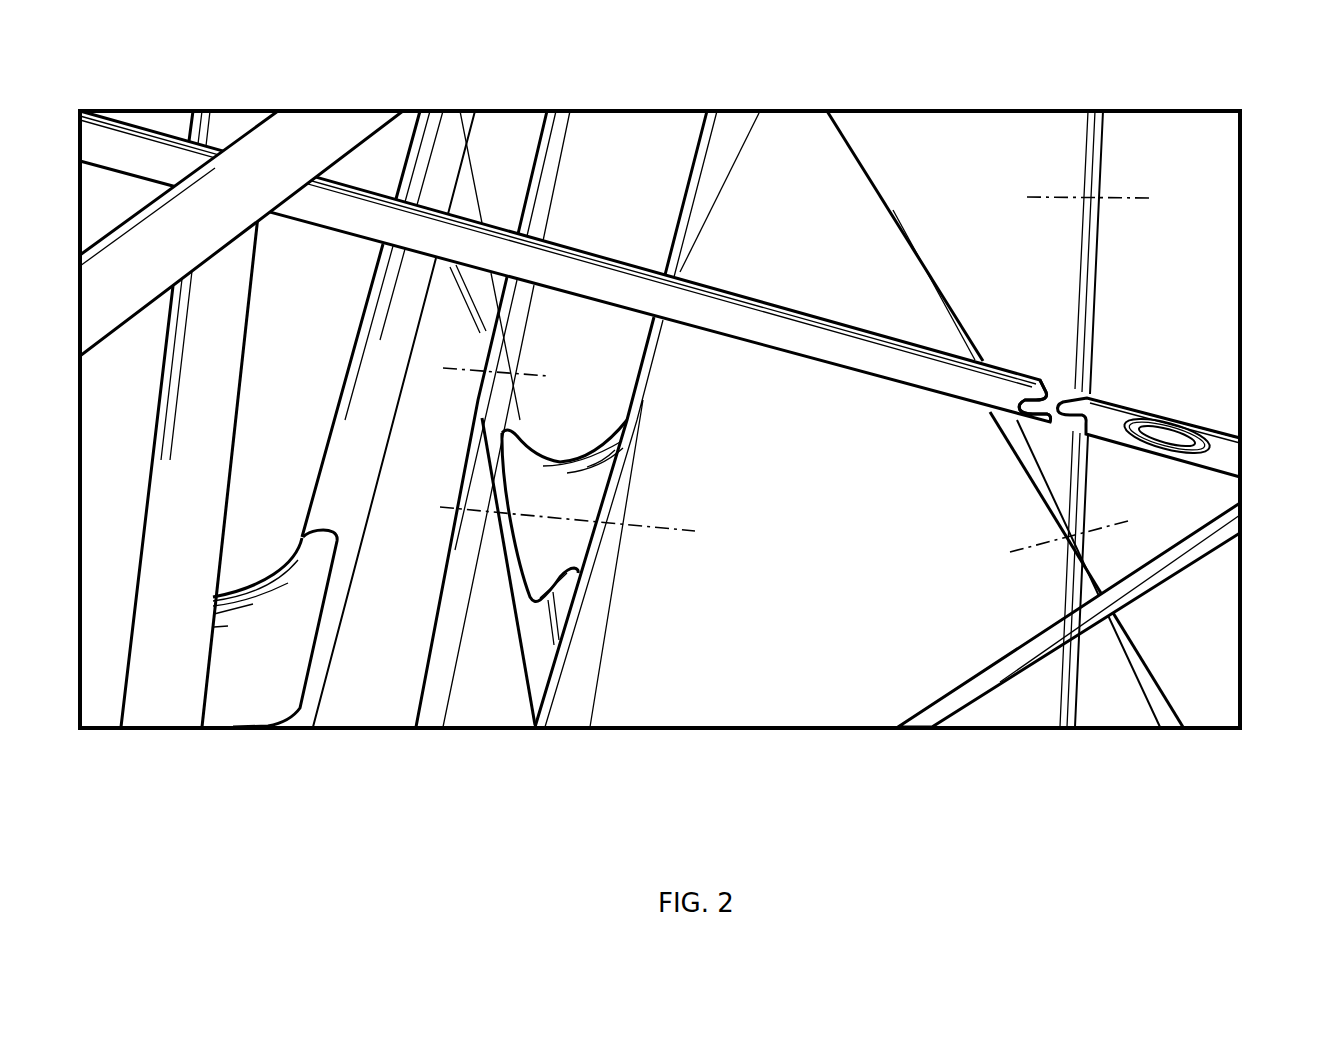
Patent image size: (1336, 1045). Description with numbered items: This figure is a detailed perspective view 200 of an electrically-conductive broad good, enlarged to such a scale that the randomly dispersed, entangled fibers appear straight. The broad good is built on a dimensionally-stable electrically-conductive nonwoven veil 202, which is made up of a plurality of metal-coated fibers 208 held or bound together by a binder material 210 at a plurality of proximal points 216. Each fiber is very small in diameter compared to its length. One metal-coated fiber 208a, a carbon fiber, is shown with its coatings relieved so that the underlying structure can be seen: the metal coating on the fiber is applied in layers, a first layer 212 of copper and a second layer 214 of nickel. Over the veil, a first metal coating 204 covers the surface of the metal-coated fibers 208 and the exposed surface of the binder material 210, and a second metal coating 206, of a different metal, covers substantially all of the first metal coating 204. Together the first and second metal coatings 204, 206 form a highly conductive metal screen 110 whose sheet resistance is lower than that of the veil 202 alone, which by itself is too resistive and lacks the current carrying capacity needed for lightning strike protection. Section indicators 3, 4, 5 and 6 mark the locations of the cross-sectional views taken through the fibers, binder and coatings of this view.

The highly conductive metal screen 110 is at (1202, 215).
The detailed perspective view 200 is at (1160, 111).
The dimensionally-stable electrically-conductive nonwoven veil 202 is at (1182, 174).
The first metal coating 204 is at (1047, 408).
The second metal coating 206 is at (862, 362).
The metal-coated fibers 208 is at (237, 111).
The metal-coated fiber 208a is at (1163, 407).
The binder material 210 is at (543, 452).
The first layer 212 is at (1197, 397).
The second layer 214 is at (1210, 408).
The proximal points 216 is at (509, 546).
The section line 3- 3 is at (1029, 170).
The section line 4- 4 is at (443, 478).
The section line 5- 5 is at (1013, 524).
The section line 6- 6 is at (438, 345).